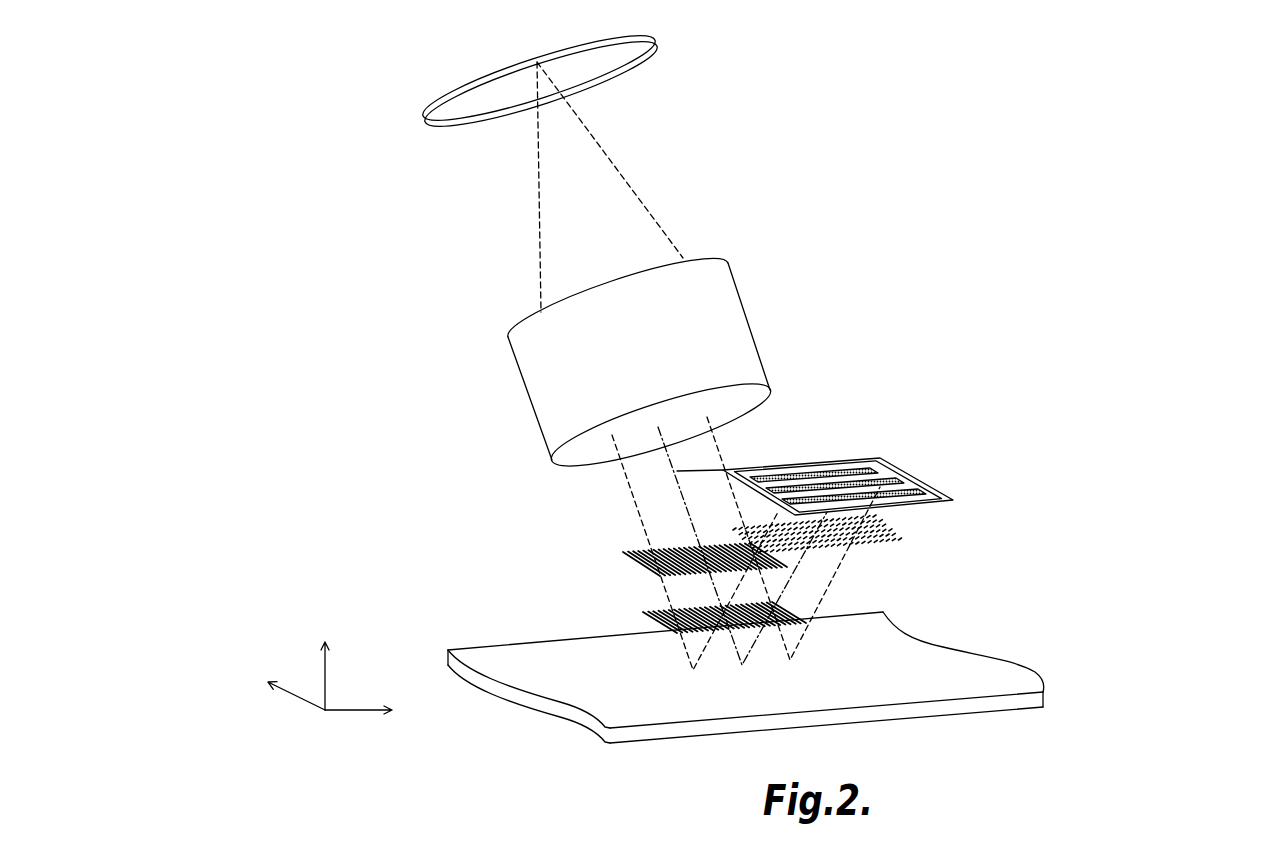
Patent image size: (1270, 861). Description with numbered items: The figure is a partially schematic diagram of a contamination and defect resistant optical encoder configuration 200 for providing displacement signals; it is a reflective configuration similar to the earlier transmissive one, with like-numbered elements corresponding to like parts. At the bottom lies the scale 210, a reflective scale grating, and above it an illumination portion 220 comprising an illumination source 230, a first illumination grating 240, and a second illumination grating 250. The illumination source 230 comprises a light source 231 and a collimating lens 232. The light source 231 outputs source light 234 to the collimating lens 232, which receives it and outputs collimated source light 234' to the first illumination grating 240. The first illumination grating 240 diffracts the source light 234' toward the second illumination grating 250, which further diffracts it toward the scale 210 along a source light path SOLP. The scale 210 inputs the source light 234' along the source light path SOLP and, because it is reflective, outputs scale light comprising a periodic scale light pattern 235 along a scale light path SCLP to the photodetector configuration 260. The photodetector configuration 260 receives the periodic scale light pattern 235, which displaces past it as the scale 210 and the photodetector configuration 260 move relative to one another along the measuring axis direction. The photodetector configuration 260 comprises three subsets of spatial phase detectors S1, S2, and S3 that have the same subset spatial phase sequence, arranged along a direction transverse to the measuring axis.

The optical encoder configuration 200 is at (1158, 58).
The scale 210 is at (970, 713).
The illumination portion 220 is at (300, 373).
The illumination source 230 is at (362, 333).
The light source 231 is at (420, 120).
The collimating lens 232 is at (515, 363).
The source light 234 is at (613, 187).
The collimated source light 234' is at (691, 543).
The periodic scale light pattern 235 is at (905, 534).
The first illumination grating 240 is at (630, 560).
The second illumination grating 250 is at (660, 628).
The photodetector configuration 260 is at (838, 459).
The first subset of spatial phase detectors S1 is at (868, 466).
The second subset of spatial phase detectors S2 is at (902, 479).
The third subset of spatial phase detectors S3 is at (923, 494).
The source light path SOLP is at (723, 470).
The scale light path SCLP is at (788, 578).